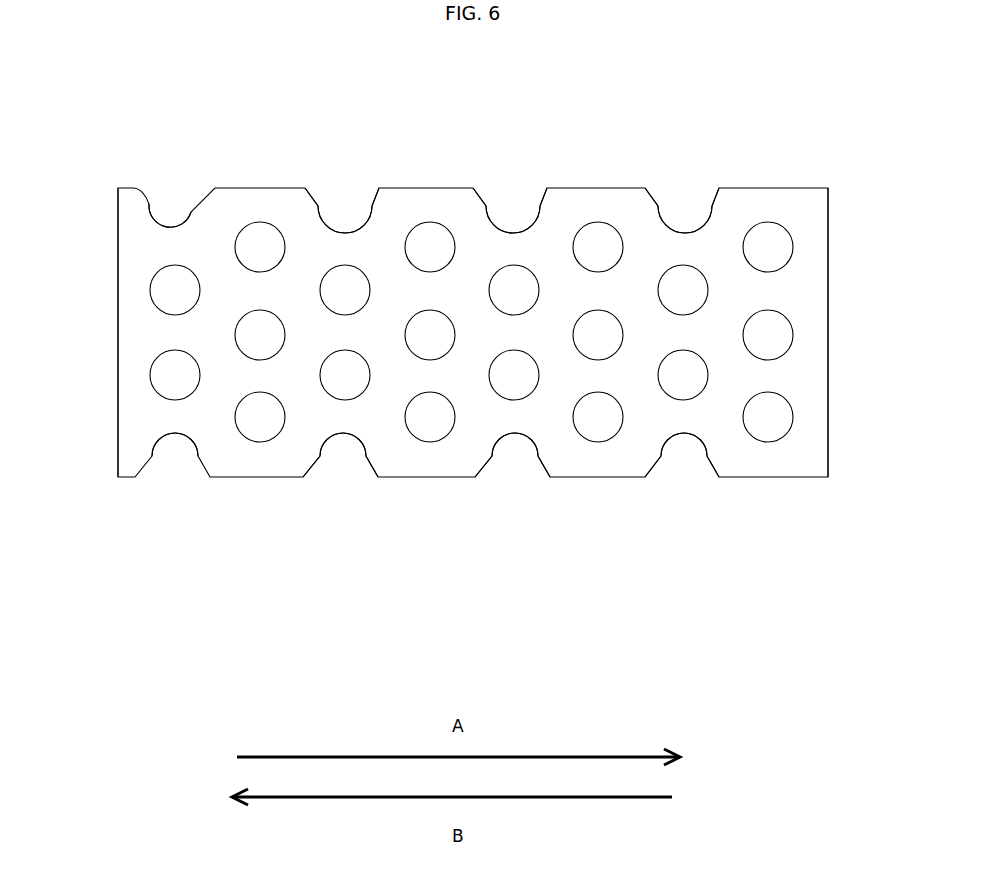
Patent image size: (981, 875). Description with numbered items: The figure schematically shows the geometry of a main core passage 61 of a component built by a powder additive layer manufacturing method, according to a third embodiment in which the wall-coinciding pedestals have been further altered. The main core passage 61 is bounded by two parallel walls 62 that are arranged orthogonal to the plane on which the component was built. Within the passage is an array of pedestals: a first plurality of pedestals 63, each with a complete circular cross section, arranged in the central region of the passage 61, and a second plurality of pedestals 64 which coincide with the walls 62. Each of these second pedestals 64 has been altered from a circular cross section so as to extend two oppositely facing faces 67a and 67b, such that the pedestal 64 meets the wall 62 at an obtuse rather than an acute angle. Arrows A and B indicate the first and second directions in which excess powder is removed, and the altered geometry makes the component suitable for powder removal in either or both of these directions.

The main core passage 61 is at (168, 335).
The parallel walls 62 is at (782, 188).
The first plurality of pedestals 63 is at (770, 415).
The second plurality of pedestals 64 is at (168, 207).
The first face of pedestal 67a is at (317, 207).
The second face of pedestal 67b is at (374, 207).